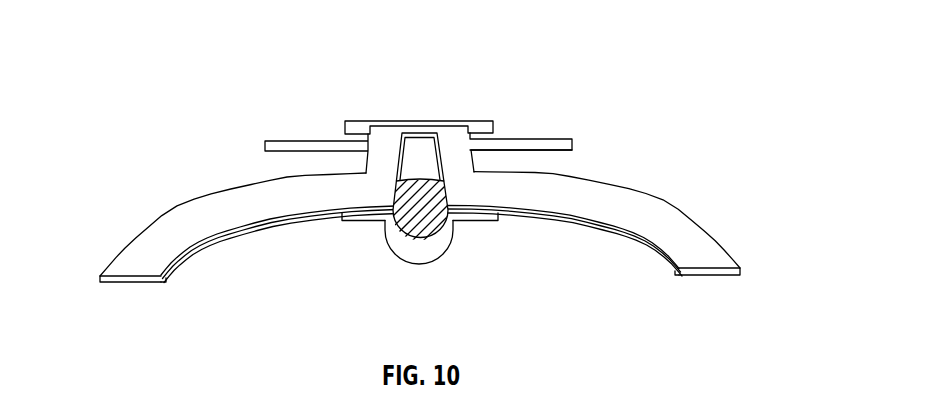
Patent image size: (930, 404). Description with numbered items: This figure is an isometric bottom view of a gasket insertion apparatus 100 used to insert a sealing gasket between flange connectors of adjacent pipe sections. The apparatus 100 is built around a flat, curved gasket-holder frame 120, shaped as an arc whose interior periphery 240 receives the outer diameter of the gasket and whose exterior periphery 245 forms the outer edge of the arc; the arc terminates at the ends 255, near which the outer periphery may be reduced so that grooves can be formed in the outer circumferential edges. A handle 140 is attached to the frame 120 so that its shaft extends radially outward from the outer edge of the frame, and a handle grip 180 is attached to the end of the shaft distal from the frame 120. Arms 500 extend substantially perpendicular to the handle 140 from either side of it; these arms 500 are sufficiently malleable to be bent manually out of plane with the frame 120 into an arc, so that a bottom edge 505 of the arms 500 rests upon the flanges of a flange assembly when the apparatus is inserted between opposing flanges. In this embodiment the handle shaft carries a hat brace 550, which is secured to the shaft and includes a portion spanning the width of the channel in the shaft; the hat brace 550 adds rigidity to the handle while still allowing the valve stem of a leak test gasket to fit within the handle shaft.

The gasket insertion apparatus 100 is at (210, 51).
The gasket-holder frame 120 is at (638, 197).
The handle 140 is at (356, 158).
The handle grip 180 is at (483, 121).
The interior periphery 240 is at (233, 232).
The exterior periphery 245 is at (122, 247).
The ends 255 is at (128, 283).
The arms 500 is at (567, 139).
The bottom edge 505 is at (557, 152).
The hat brace 550 is at (430, 247).